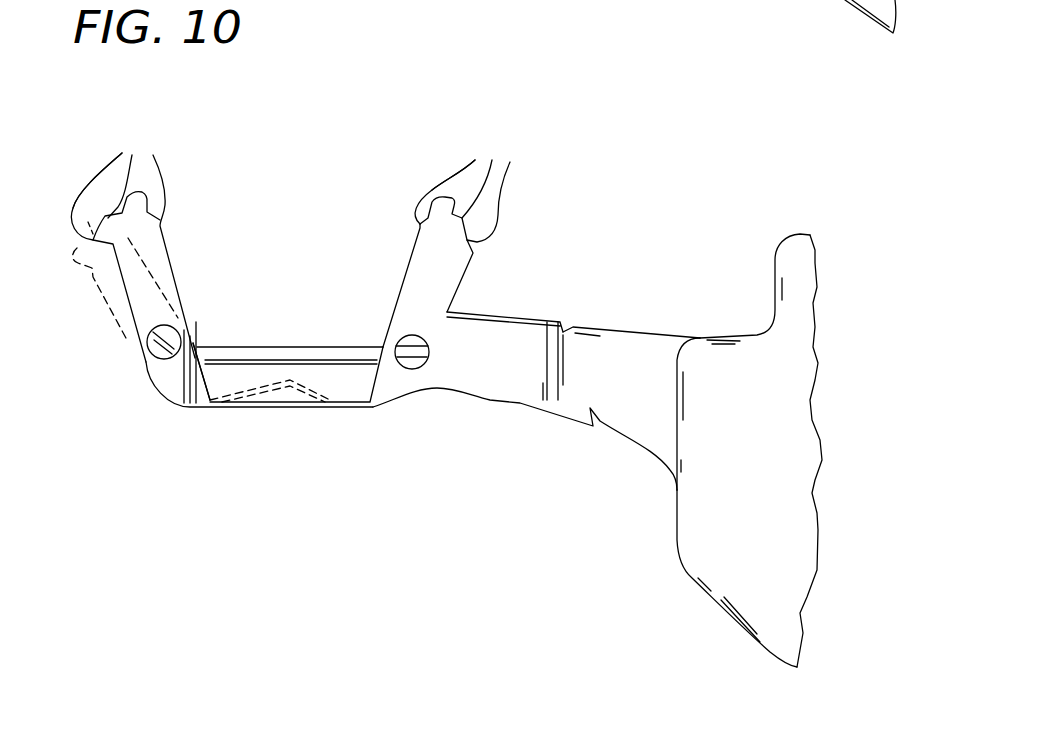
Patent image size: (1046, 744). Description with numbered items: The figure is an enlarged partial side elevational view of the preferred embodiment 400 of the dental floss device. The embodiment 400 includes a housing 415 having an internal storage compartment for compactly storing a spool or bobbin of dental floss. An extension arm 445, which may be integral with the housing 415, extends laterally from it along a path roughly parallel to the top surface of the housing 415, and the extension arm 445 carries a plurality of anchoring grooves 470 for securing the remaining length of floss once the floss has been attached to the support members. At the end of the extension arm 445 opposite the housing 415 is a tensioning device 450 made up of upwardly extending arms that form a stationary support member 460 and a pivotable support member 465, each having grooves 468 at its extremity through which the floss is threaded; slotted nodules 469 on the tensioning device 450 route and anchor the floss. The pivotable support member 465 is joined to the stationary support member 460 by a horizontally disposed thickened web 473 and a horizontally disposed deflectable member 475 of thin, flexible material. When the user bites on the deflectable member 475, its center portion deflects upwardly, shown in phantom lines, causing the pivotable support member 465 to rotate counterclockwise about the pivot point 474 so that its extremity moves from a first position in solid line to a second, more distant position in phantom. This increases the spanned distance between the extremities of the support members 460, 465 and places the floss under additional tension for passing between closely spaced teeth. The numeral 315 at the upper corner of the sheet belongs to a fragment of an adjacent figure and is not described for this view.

The preferred embodiment of the device 400 is at (560, 262).
The housing 415 is at (710, 563).
The extension arm 445 is at (548, 402).
The tensioning device 450 is at (218, 430).
The stationary support member 460 is at (415, 247).
The pivotable support member 465 is at (162, 242).
The grooves 468 is at (299, 164).
The slotted nodules 469 is at (147, 365).
The anchoring grooves 470 is at (607, 414).
The thickened web 473 is at (281, 347).
The pivot point 474 is at (193, 343).
The deflectable member 475 is at (295, 408).
The flange tip (adjacent figure) 315 is at (840, 15).